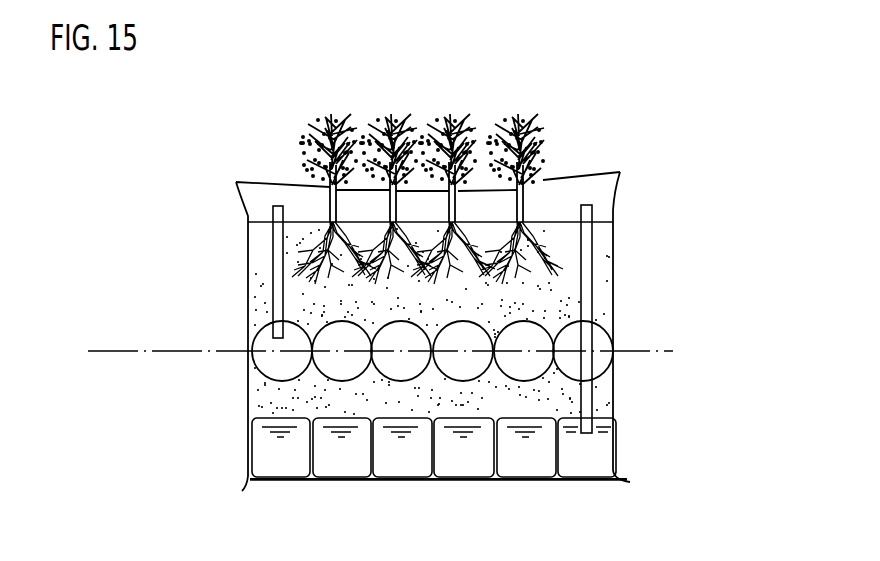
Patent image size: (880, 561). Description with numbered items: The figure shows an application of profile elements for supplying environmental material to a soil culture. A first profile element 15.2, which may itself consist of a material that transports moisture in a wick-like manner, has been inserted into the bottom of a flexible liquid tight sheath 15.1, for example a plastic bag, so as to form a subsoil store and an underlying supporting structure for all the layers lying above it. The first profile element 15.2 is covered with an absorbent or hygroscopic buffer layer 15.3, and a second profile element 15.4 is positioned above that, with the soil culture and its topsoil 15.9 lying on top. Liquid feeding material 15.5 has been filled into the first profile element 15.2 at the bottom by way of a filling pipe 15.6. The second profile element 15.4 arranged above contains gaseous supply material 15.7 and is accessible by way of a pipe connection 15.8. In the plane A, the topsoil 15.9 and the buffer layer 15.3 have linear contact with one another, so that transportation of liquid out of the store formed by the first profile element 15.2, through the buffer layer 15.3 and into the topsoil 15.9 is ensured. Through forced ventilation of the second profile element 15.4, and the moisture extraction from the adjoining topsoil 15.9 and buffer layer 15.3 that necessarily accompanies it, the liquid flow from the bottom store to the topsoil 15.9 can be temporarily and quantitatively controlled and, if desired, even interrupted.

The flexible liquid tight sheath 15.1 is at (247, 216).
The first profile element 15.2 is at (433, 440).
The buffer layer 15.3 is at (493, 398).
The second profile element 15.4 is at (418, 359).
The liquid feeding material 15.5 is at (280, 433).
The filling pipe 15.6 is at (587, 273).
The gaseous supply material 15.7 is at (277, 362).
The pipe connection 15.8 is at (280, 288).
The topsoil 15.9 is at (600, 241).